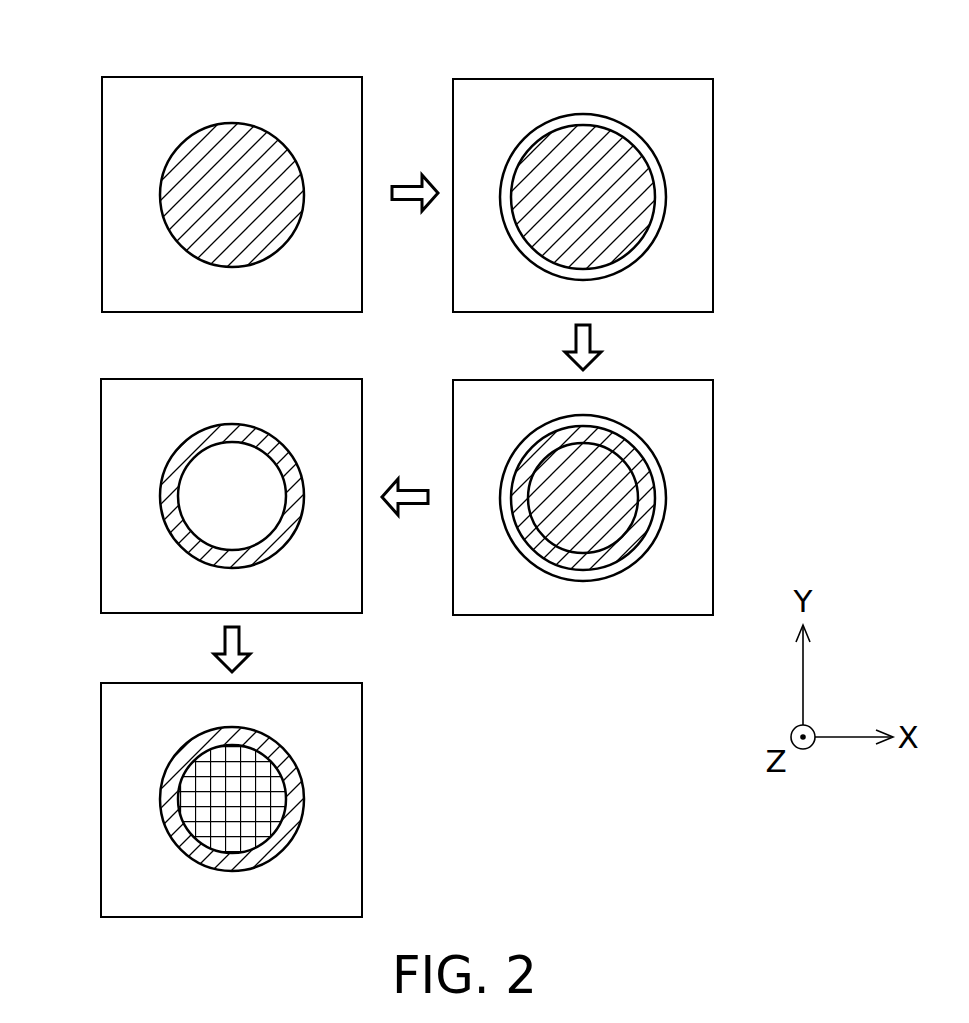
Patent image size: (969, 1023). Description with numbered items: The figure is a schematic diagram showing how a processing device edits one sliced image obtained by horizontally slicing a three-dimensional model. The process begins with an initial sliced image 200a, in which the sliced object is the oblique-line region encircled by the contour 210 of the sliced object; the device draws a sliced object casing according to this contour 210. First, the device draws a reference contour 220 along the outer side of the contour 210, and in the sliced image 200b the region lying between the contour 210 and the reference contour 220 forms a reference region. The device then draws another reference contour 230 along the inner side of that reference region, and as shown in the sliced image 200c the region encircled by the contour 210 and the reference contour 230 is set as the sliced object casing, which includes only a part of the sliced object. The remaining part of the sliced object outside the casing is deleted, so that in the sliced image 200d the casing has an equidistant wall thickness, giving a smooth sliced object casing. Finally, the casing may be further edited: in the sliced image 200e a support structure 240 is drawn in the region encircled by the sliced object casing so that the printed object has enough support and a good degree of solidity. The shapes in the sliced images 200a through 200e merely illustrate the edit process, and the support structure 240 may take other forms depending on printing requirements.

The initial sliced image 200a is at (197, 77).
The sliced image 200b is at (637, 79).
The sliced image 200c is at (225, 379).
The sliced image 200d is at (665, 380).
The sliced image 200e is at (283, 683).
The contour of the sliced object 210 is at (160, 186).
The reference contour 220 is at (647, 142).
The reference contour 230 is at (627, 533).
The support structure 240 is at (200, 767).